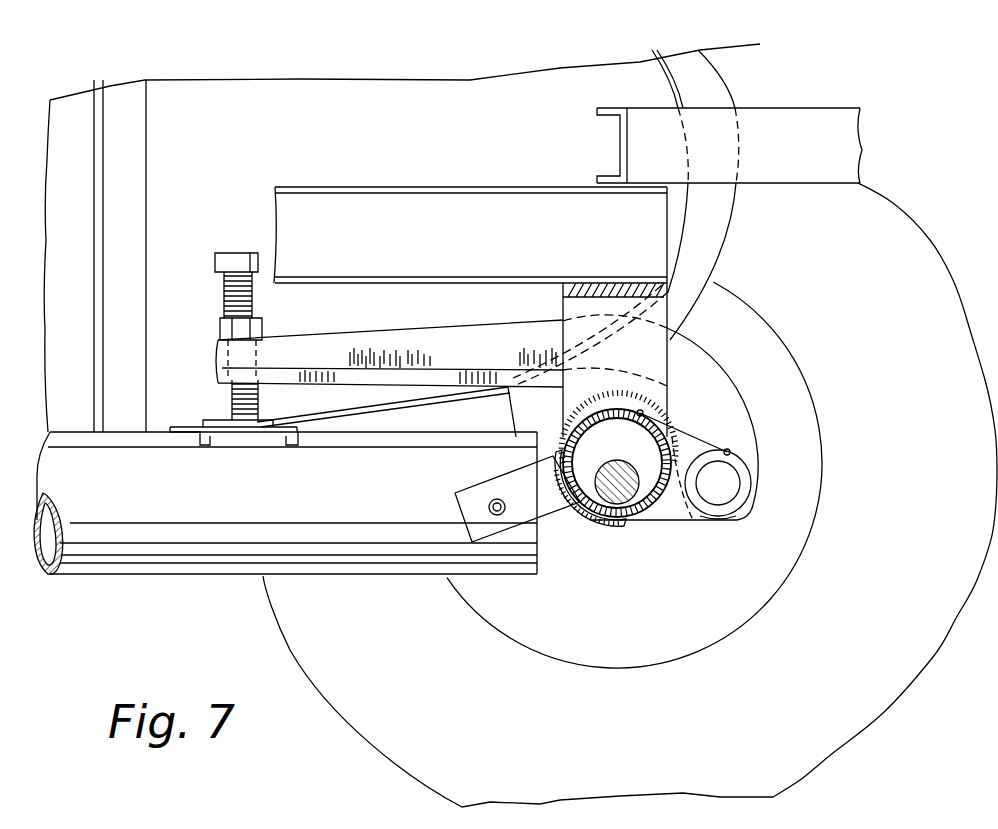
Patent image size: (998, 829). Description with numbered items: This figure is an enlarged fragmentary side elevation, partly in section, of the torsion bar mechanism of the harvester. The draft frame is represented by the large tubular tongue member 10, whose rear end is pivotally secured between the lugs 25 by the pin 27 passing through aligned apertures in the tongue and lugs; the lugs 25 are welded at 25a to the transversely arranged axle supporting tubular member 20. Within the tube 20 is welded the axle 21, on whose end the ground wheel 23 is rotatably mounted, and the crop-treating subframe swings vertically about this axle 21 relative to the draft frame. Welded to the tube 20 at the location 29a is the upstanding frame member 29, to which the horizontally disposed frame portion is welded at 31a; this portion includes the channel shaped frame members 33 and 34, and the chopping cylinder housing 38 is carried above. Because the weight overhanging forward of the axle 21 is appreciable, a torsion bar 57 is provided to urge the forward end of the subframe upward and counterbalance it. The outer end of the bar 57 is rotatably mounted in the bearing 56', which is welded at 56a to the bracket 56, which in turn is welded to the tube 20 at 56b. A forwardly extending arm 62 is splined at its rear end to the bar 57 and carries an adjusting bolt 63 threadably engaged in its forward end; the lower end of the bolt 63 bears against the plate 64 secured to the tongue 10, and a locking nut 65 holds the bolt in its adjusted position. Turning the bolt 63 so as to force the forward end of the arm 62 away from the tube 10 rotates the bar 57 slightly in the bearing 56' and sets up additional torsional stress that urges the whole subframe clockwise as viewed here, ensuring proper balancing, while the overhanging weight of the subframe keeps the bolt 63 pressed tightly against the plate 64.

The chopping cylinder housing 38 is at (392, 134).
The channel shaped frame member 34 is at (430, 187).
The channel shaped frame member 33 is at (795, 108).
The weld 31a is at (695, 195).
The upstanding frame member 29 is at (565, 300).
The weld location 29a is at (633, 410).
The forwardly extending arm 62 is at (340, 340).
The adjusting bolt 63 is at (222, 283).
The locking nut 65 is at (221, 338).
The plate 64 is at (210, 420).
The tubular tongue member 10 is at (138, 575).
The ground wheel 23 is at (330, 700).
The bracket 56 is at (660, 435).
The weld 56a is at (730, 452).
The weld 56b is at (644, 414).
The bearing 56' is at (733, 531).
The torsion bar 57 is at (742, 495).
The axle 21 is at (622, 472).
The weld 25a is at (572, 496).
The axle supporting tubular member 20 is at (606, 510).
The lugs 25 is at (566, 518).
The pin 27 is at (503, 503).